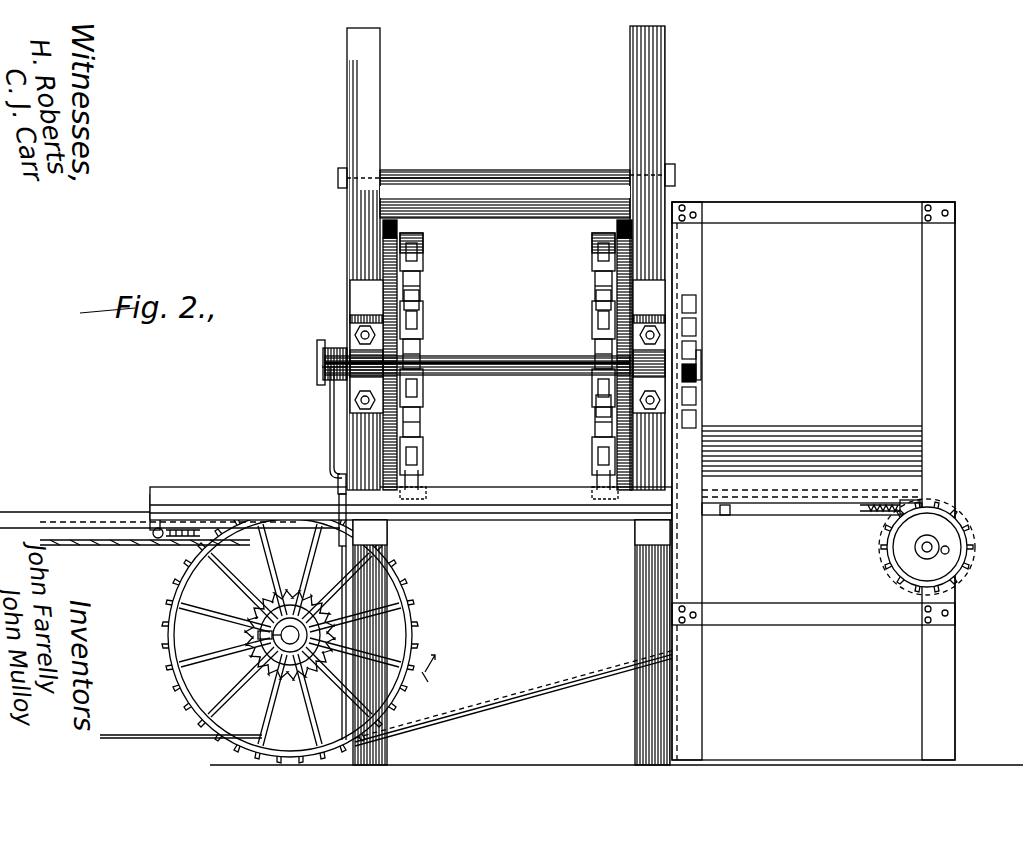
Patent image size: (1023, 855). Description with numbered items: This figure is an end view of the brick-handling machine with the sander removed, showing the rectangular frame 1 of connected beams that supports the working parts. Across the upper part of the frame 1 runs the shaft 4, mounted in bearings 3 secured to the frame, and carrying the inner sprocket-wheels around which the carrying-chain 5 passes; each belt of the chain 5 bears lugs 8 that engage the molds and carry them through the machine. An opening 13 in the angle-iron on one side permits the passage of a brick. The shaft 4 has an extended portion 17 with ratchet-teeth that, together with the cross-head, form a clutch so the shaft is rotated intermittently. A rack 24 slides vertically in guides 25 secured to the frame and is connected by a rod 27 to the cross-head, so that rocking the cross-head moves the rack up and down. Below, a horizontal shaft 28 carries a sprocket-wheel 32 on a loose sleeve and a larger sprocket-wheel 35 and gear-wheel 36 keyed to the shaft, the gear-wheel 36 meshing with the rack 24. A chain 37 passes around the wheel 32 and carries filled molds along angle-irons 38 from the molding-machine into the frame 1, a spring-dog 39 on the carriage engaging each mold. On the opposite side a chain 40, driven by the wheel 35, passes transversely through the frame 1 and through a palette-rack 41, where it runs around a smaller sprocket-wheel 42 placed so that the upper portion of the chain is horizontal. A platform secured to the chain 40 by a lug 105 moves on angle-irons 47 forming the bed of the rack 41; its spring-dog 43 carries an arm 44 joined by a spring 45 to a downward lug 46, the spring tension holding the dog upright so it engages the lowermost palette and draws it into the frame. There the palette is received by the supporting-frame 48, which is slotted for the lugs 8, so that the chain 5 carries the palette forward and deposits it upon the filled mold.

The frame 1 is at (354, 232).
The bearings 3 is at (377, 401).
The shaft 4 is at (470, 364).
The carrying-chain 5 is at (418, 302).
The lugs 8 is at (598, 298).
The opening 13 is at (356, 290).
The extended portion 17 is at (338, 348).
The rack 24 is at (339, 500).
The guides 25 is at (338, 484).
The rod 27 is at (330, 405).
The shaft 28 is at (282, 624).
The sprocket-wheel 32 is at (200, 612).
The sprocket-wheel 35 is at (168, 612).
The gear-wheel 36 is at (290, 635).
The chain 37 is at (102, 545).
The angle-irons 38 is at (62, 506).
The spring-dog 39 is at (160, 538).
The chain 40 is at (790, 512).
The rack 41 is at (952, 408).
The sprocket-wheel 42 is at (964, 536).
The spring-dog 43 is at (925, 506).
The arm 44 is at (924, 498).
The spring 45 is at (890, 512).
The lug 46 is at (870, 508).
The angle-irons 47 is at (760, 497).
The supporting-frame 48 is at (476, 495).
The lug 105 is at (723, 515).